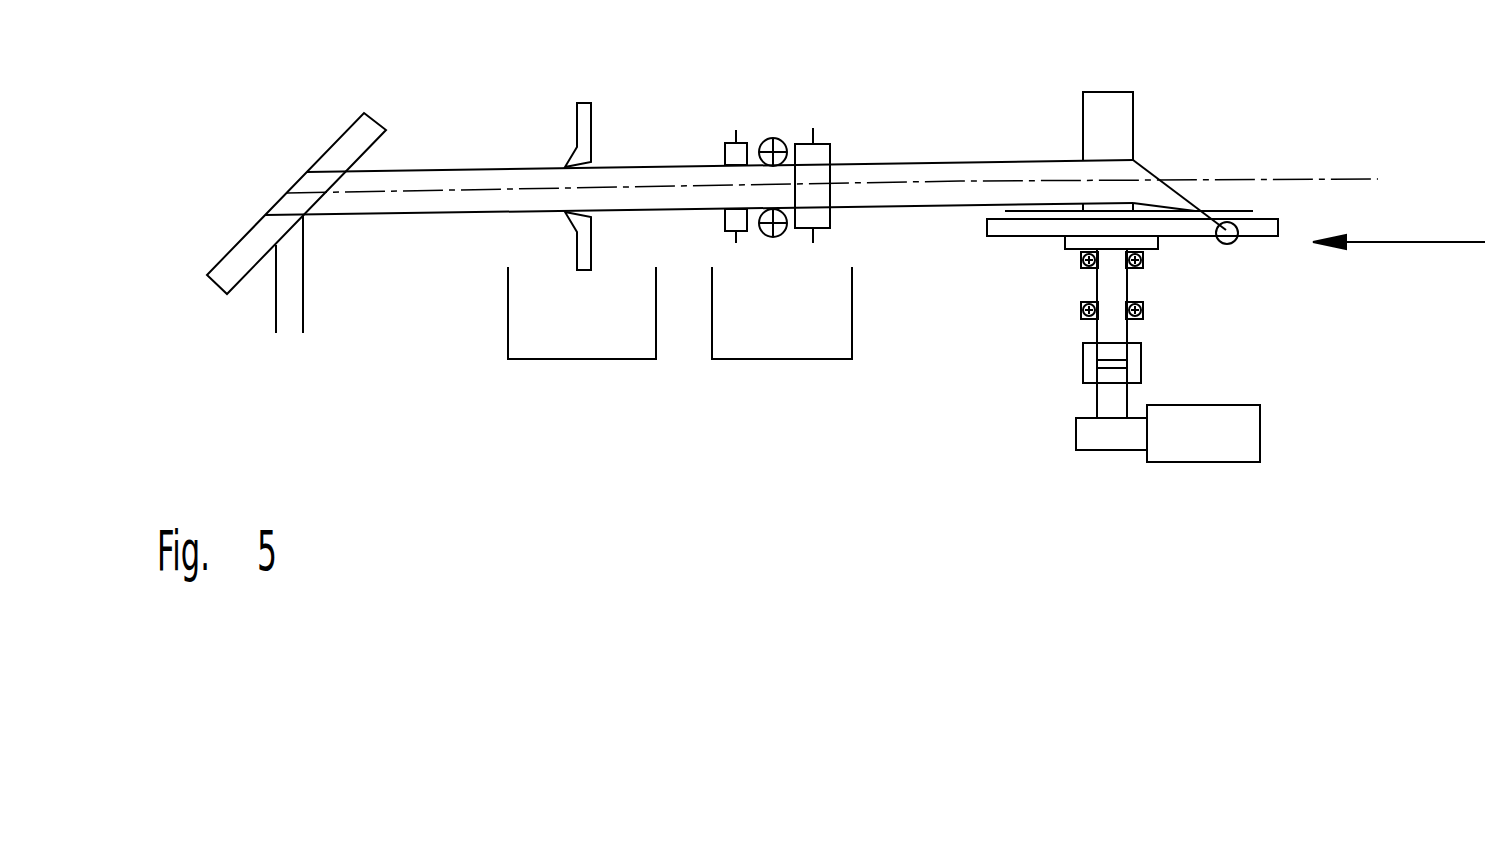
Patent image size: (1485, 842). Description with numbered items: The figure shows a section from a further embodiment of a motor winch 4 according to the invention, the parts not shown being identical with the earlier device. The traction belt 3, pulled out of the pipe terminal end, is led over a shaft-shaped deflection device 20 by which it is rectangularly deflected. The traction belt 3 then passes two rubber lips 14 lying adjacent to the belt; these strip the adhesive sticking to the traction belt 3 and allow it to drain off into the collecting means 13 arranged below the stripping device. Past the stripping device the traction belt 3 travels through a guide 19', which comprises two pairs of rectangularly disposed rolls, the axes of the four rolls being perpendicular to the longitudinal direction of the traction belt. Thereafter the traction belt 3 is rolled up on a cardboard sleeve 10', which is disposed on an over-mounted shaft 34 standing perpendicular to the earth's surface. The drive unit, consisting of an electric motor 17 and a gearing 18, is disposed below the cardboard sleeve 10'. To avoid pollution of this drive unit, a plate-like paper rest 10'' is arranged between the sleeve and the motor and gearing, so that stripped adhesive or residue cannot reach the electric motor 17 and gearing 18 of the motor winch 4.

The shaft-shaped deflection device 20 is at (246, 252).
The traction belt 3 is at (263, 323).
The rubber lips 14 is at (615, 167).
The guide 19' is at (787, 154).
The collecting means 13 is at (790, 363).
The cardboard sleeve 10' is at (1163, 161).
The plate-like paper rest 10'' is at (1185, 180).
The over-mounted shaft 34 is at (1109, 281).
The gearing 18 is at (1118, 439).
The electric motor 17 is at (1209, 437).
The motor winch 4 is at (1399, 219).